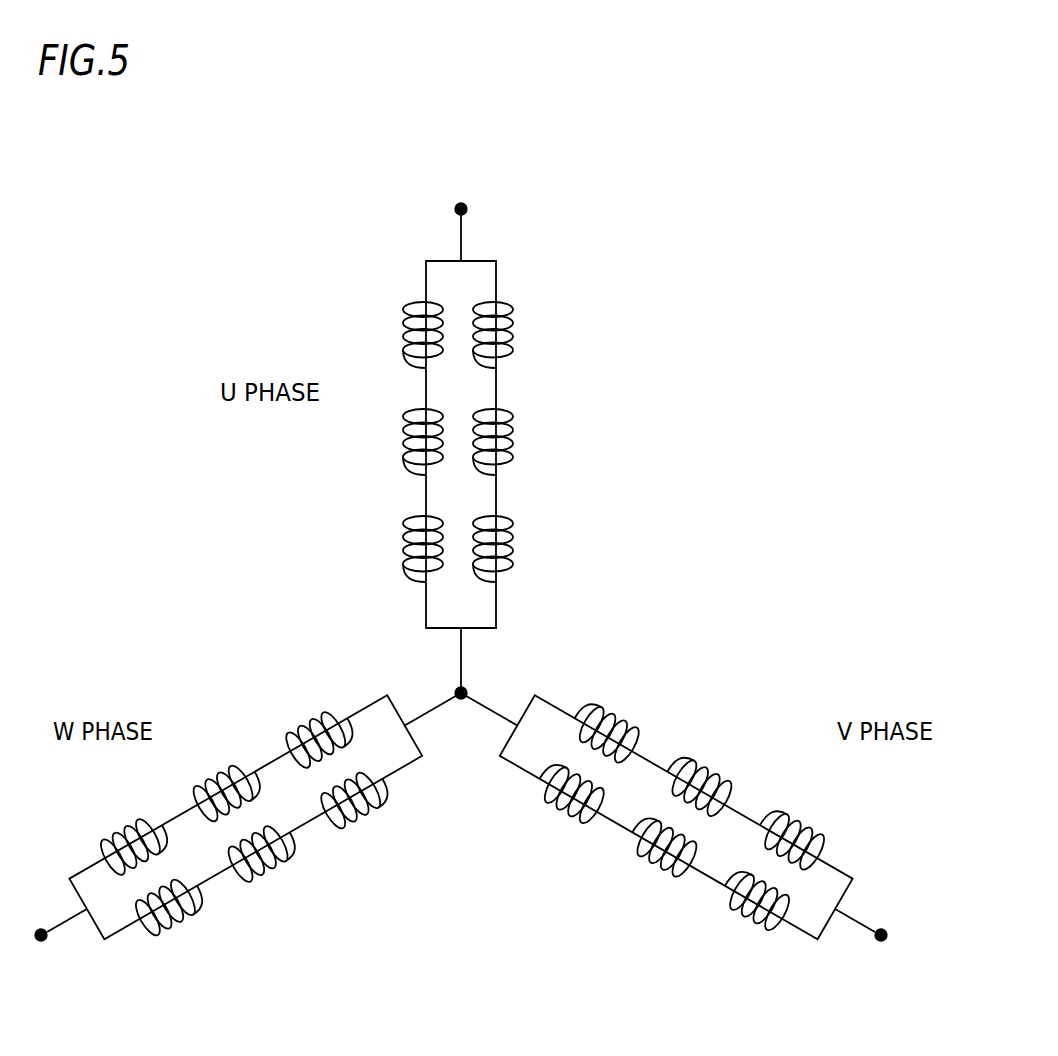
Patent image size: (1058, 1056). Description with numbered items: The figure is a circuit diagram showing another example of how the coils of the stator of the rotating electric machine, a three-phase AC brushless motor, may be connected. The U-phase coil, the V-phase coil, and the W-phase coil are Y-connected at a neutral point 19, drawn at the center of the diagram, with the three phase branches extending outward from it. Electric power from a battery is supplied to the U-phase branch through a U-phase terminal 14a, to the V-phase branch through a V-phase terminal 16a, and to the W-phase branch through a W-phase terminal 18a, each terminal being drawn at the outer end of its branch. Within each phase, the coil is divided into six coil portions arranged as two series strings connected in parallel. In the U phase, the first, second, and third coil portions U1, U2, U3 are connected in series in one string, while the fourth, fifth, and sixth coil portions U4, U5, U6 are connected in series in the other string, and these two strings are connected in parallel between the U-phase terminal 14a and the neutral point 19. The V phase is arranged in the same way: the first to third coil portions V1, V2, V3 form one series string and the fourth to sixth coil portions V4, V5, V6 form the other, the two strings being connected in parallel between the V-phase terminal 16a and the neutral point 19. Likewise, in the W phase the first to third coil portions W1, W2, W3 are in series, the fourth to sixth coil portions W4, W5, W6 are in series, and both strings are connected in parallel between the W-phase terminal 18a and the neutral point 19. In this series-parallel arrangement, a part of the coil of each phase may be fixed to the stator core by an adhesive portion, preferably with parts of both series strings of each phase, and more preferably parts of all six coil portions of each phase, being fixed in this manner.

The U-phase terminal 14a is at (461, 203).
The V-phase terminal 16a is at (883, 941).
The W-phase terminal 18a is at (41, 941).
The neutral point 19 is at (467, 688).
The first coil portion U1 is at (402, 330).
The second coil portion U2 is at (402, 433).
The third coil portion U3 is at (402, 545).
The fourth coil portion U4 is at (513, 336).
The fifth coil portion U5 is at (513, 440).
The sixth coil portion U6 is at (513, 550).
The first coil portion V1 is at (744, 920).
The second coil portion V2 is at (658, 868).
The third coil portion V3 is at (562, 813).
The fourth coil portion V4 is at (815, 830).
The fifth coil portion V5 is at (716, 768).
The sixth coil portion V6 is at (622, 713).
The first coil portion W1 is at (125, 830).
The second coil portion W2 is at (217, 777).
The third coil portion W3 is at (310, 722).
The fourth coil portion W4 is at (172, 925).
The fifth coil portion W5 is at (268, 870).
The sixth coil portion W6 is at (358, 817).